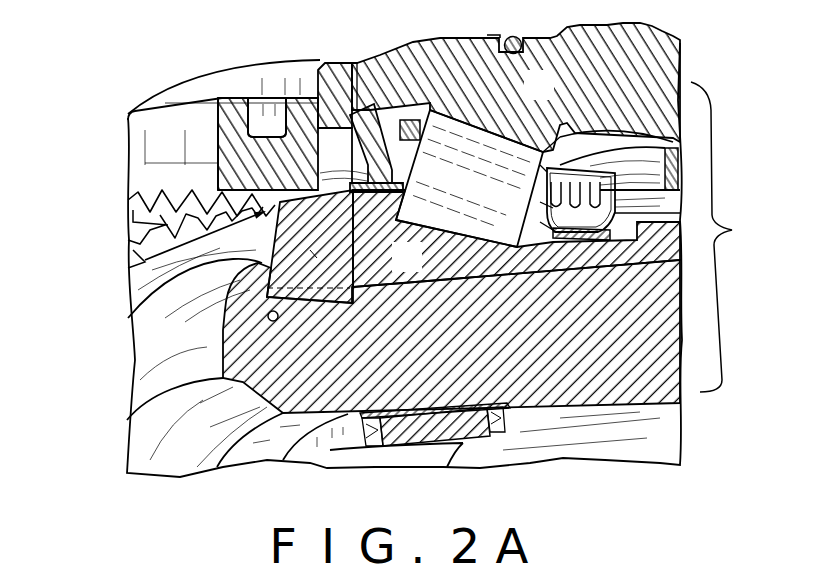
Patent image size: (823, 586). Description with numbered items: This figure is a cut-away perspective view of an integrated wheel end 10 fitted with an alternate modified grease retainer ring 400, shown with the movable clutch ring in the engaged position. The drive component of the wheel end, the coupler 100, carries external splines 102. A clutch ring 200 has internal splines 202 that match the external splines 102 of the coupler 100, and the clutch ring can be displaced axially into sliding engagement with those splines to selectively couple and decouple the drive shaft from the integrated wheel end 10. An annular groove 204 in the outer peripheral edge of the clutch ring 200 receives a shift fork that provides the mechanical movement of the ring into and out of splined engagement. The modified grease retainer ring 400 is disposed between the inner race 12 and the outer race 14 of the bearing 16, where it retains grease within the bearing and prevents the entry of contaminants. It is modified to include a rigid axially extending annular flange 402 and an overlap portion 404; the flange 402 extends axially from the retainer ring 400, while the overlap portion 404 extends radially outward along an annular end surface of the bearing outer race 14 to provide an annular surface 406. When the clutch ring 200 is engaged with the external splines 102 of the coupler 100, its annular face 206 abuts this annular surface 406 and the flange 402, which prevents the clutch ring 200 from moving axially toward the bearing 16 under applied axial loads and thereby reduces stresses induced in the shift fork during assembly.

The integrated wheel end 10 is at (728, 237).
The inner race 12 is at (395, 268).
The outer race 14 is at (527, 97).
The bearing 16 is at (459, 202).
The coupler 100 is at (128, 322).
The external splines 102 is at (145, 260).
The clutch ring 200 is at (233, 160).
The internal splines 202 is at (149, 216).
The annular groove 204 is at (284, 146).
The annular face 206 is at (323, 146).
The modified grease retainer ring 400 is at (387, 110).
The axially extending annular flange 402 is at (317, 93).
The overlap portion 404 is at (340, 78).
The annular surface 406 is at (288, 80).